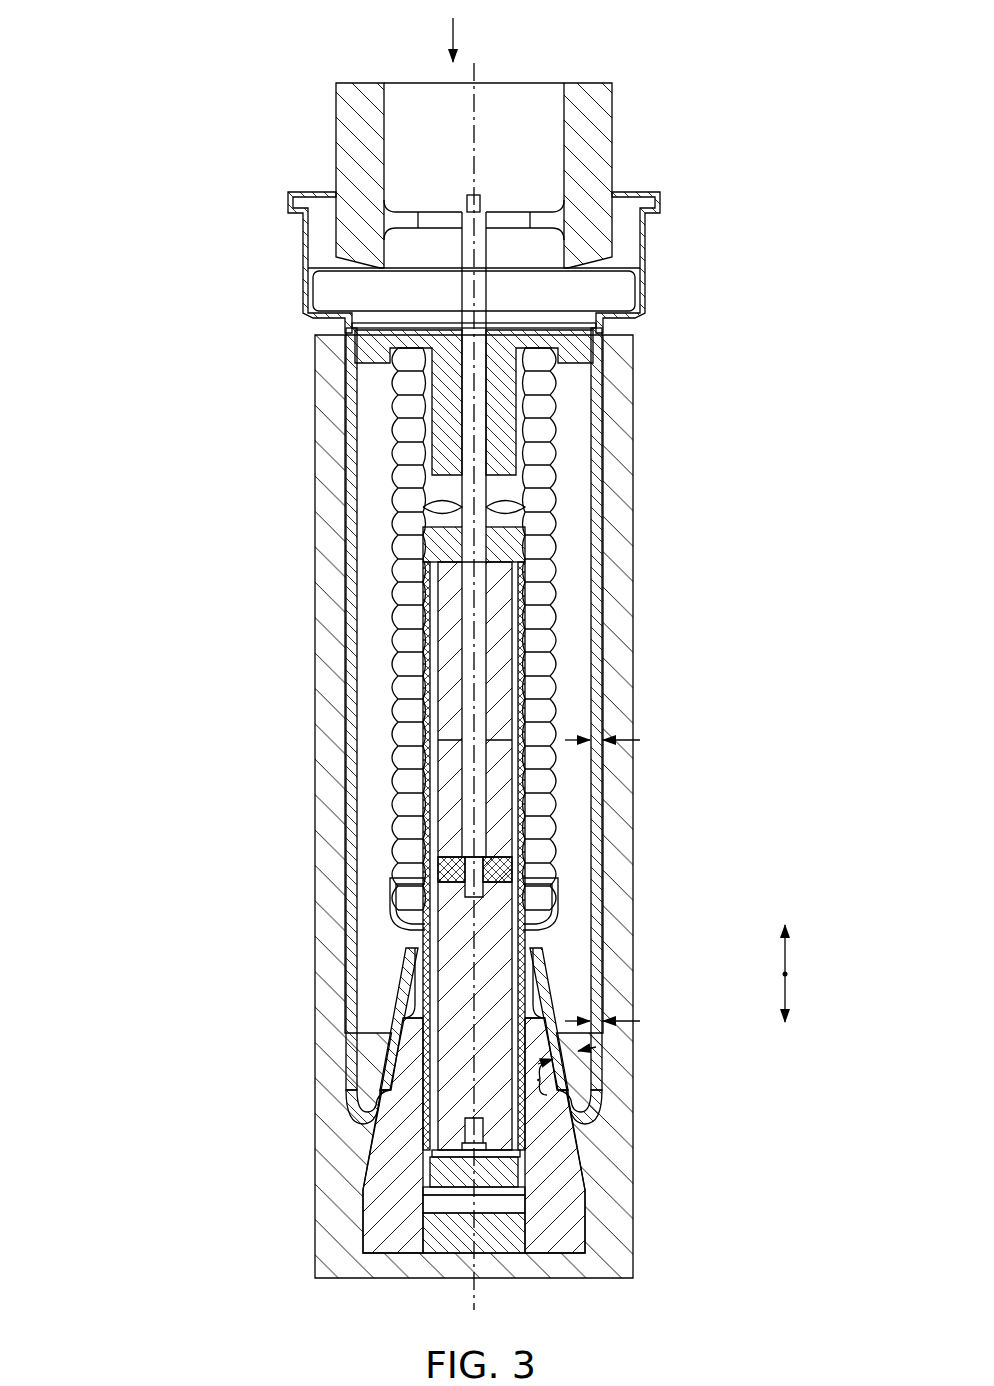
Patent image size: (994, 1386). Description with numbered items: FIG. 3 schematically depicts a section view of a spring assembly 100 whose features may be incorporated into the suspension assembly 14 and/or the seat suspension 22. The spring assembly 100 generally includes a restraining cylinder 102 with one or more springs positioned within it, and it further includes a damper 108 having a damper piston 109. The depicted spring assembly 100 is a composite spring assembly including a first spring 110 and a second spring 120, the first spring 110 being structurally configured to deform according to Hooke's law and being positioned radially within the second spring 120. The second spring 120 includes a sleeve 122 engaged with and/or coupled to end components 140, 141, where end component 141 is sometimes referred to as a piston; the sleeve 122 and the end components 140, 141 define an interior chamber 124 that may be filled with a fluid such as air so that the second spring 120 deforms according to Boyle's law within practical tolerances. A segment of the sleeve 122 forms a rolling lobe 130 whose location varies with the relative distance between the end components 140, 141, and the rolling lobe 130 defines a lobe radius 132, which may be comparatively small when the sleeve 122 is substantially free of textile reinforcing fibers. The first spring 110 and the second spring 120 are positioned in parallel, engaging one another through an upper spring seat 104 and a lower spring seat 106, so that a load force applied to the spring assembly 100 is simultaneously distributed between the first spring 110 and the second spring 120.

The suspension assembly 14 is at (443, 657).
The seat suspension 22 is at (443, 657).
The spring assembly 100 is at (443, 657).
The restraining cylinder 102 is at (316, 652).
The upper spring seat 104 is at (356, 342).
The lower spring seat 106 is at (397, 921).
The damper 108 is at (492, 963).
The damper piston 109 is at (486, 207).
The first spring 110 is at (552, 812).
The second spring 120 is at (474, 726).
The sleeve 122 is at (603, 647).
The interior chamber 124 is at (367, 753).
The rolling lobe 130 is at (597, 1105).
The lobe radius 132 is at (360, 1108).
The end component 140 is at (600, 222).
The end component 141 is at (573, 1227).